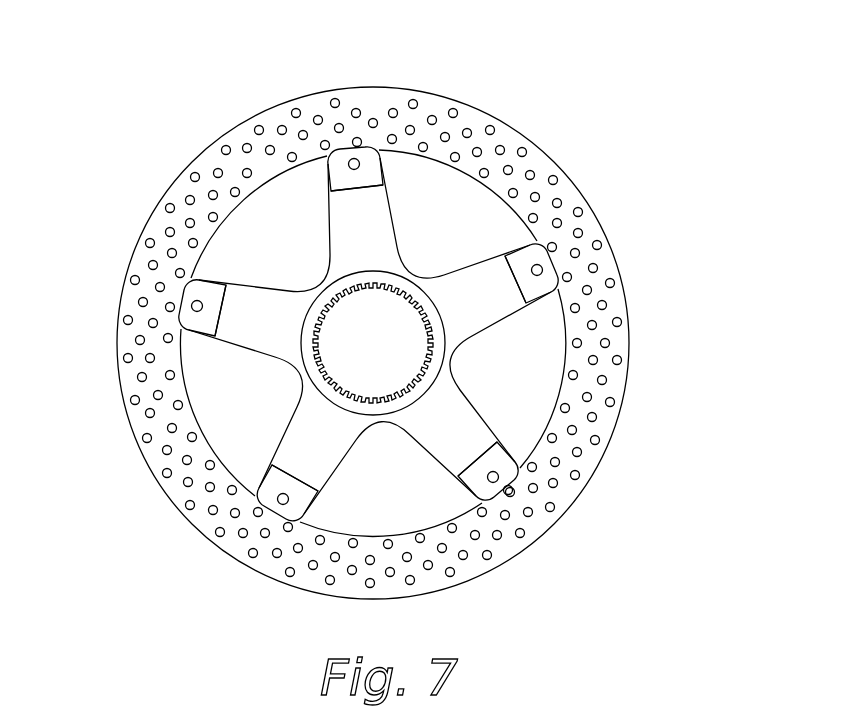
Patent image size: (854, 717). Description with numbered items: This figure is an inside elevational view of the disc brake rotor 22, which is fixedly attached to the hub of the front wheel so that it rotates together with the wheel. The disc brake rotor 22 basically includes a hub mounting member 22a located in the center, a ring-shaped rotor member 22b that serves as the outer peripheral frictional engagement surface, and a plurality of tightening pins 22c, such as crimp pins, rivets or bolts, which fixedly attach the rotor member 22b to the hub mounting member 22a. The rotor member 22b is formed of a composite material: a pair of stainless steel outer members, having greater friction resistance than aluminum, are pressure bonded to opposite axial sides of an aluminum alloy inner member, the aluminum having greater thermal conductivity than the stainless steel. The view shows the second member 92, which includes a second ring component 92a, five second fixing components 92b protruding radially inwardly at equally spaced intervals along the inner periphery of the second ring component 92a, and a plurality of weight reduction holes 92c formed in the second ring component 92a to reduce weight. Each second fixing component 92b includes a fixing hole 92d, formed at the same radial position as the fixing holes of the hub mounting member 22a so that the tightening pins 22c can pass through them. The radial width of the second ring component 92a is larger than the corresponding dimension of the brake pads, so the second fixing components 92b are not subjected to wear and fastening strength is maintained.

The disc brake rotor 22 is at (400, 310).
The hub mounting member 22a is at (283, 392).
The ring-shaped rotor member 22b is at (152, 473).
The tightening pins 22c is at (543, 266).
The second member 92 is at (582, 152).
The second ring component 92a is at (508, 142).
The second fixing components 92b is at (324, 161).
The weight reduction holes 92c is at (533, 485).
The fixing hole 92d is at (353, 165).